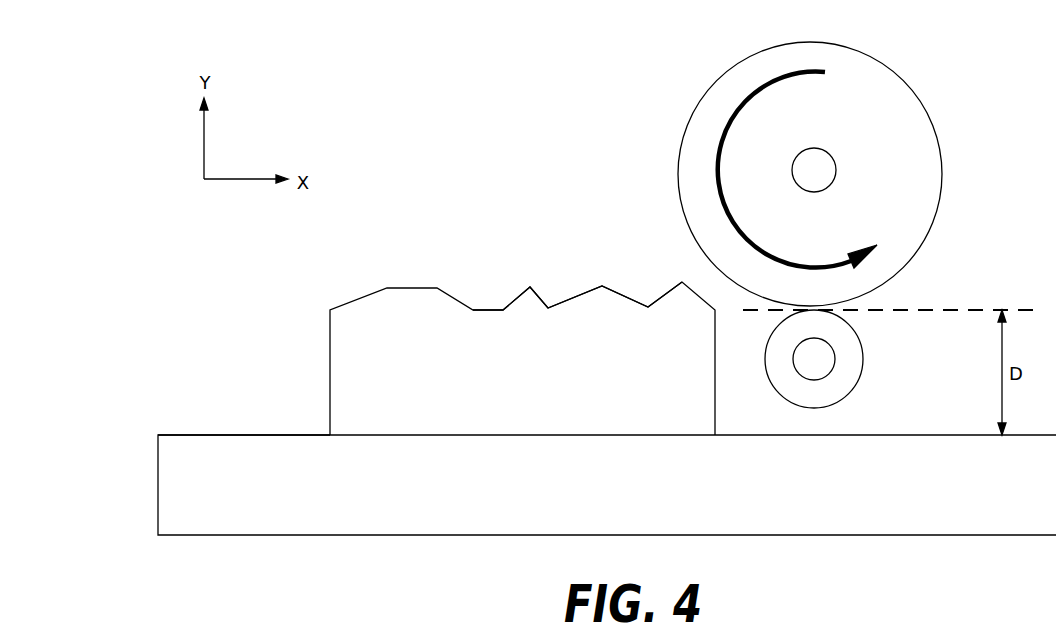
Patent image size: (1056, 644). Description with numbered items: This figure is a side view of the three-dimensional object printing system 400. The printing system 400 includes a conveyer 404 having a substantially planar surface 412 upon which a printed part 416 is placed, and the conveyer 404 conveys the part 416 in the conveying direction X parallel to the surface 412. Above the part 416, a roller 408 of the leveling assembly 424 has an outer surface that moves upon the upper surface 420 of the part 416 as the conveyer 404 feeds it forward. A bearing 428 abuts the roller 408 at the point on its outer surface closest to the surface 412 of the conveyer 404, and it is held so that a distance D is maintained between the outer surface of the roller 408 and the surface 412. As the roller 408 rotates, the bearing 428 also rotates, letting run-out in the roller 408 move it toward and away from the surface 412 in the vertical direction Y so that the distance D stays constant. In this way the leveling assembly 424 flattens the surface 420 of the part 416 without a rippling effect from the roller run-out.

The three-dimensional object printing system 400 is at (427, 112).
The conveyer 404 is at (257, 522).
The roller 408 is at (735, 77).
The surface 412 is at (225, 435).
The part 416 is at (350, 370).
The upper surface 420 is at (572, 295).
The leveling assembly 424 is at (945, 260).
The bearing 428 is at (853, 386).